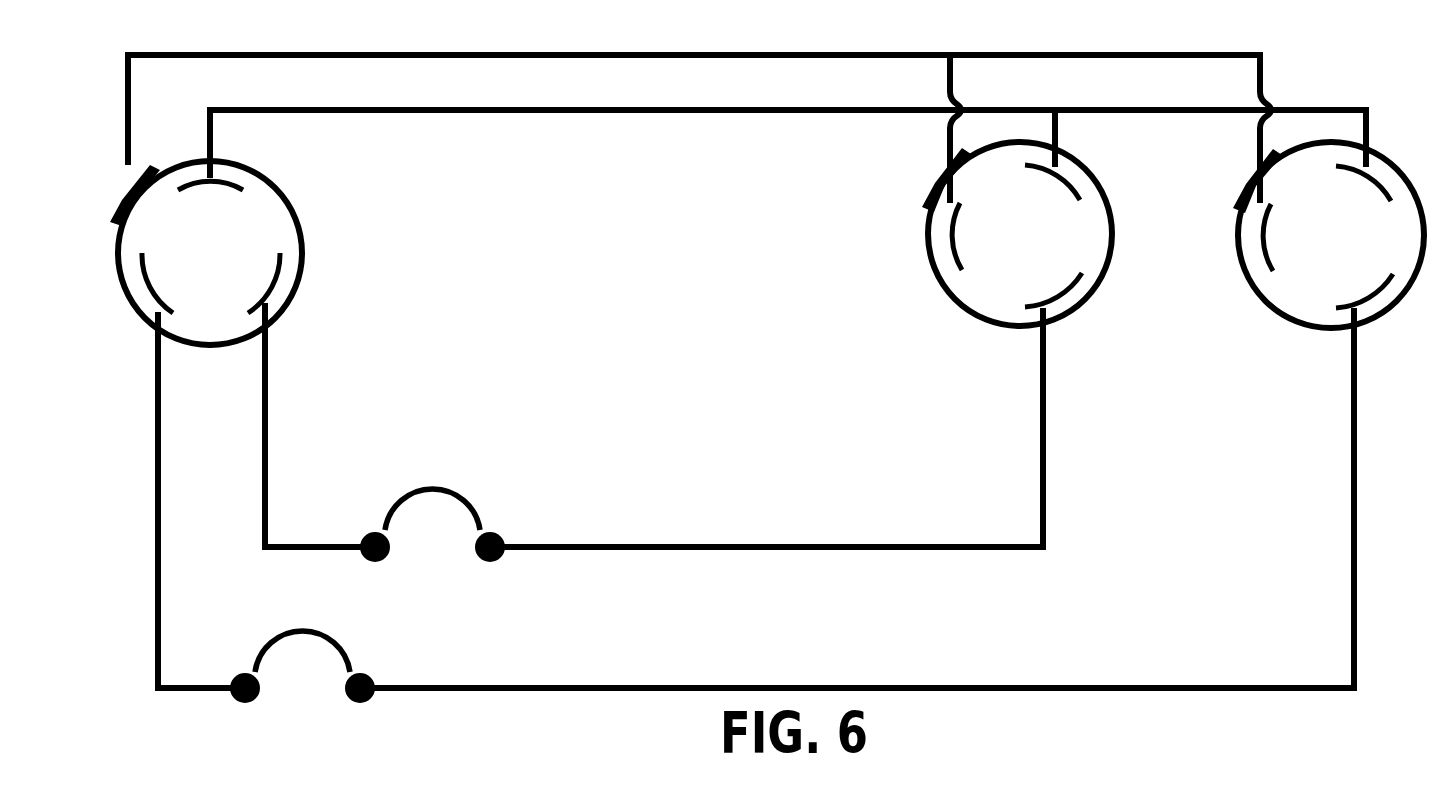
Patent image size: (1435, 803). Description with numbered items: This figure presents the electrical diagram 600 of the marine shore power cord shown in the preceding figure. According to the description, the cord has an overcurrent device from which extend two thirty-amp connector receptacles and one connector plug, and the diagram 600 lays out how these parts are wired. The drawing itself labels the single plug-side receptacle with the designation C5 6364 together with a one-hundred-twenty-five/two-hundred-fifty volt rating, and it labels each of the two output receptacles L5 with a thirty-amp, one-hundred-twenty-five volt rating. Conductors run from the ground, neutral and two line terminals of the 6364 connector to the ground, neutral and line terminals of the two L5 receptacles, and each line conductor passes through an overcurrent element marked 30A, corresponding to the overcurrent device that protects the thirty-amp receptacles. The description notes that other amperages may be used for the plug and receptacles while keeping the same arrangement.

The electrical diagram 600 is at (767, 358).
The C5 6364/65 125/250V receptacle 6364 is at (270, 253).
The L5 30R 30A 125V receptacle L5 is at (1118, 241).
The 30A circuit breaker 30A is at (367, 583).